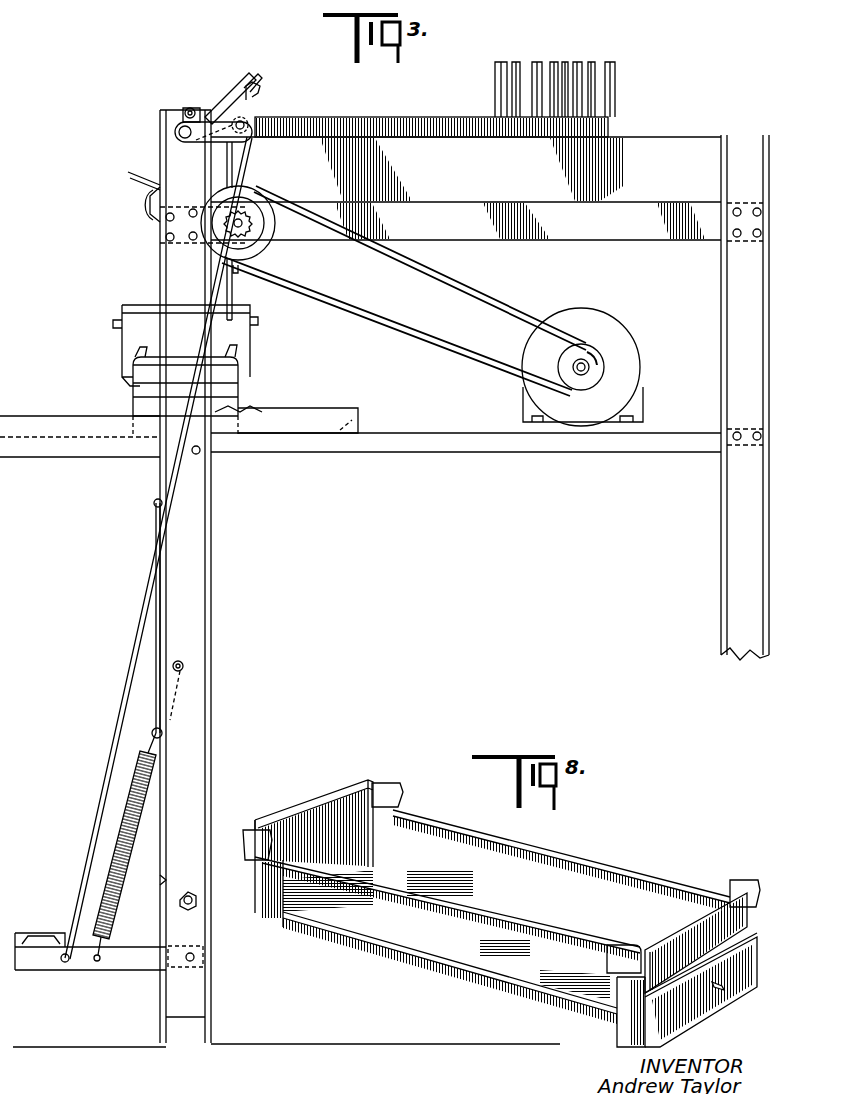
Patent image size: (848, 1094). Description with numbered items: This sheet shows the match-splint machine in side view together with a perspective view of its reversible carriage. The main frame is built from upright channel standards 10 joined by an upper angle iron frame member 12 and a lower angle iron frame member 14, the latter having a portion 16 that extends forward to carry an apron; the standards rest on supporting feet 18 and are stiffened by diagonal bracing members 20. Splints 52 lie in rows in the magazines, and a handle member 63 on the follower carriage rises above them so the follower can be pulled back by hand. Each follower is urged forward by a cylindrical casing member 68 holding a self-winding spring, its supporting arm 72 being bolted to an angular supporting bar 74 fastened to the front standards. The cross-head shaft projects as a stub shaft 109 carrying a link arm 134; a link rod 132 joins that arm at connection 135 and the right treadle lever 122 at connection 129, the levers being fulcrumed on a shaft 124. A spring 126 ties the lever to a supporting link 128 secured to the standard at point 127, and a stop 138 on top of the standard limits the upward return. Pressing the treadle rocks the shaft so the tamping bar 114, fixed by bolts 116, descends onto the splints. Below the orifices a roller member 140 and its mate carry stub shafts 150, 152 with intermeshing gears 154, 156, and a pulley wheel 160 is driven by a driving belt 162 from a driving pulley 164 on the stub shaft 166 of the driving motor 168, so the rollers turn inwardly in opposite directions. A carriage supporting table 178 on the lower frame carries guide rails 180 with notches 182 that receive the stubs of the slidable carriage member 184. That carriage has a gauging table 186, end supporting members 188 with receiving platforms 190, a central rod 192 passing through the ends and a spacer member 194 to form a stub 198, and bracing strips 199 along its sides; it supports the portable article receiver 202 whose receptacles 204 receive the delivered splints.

In FIG. 3, the upright supporting channel standards 10 is at (160, 122).
In FIG. 3, the upper angle iron frame member 12 is at (548, 240).
In FIG. 3, the lower angle iron frame member 14 is at (470, 452).
In FIG. 3, the projecting portion of lower frame member 16 is at (64, 457).
In FIG. 3, the supporting feet 18 is at (200, 1028).
In FIG. 3, the diagonal bracing members 20 is at (155, 669).
In FIG. 3, the splint 52 is at (418, 117).
In FIG. 3, the handle member 63 is at (573, 62).
In FIG. 3, the cylindrical casing member 68 is at (152, 206).
In FIG. 3, the supporting arm 72 is at (140, 175).
In FIG. 3, the angular supporting bar 74 is at (152, 194).
In FIG. 3, the stub shaft 109 is at (175, 136).
In FIG. 3, the tamping bar 114 is at (256, 80).
In FIG. 3, the bolts 116 is at (250, 84).
In FIG. 3, the treadle levers 122 is at (80, 970).
In FIG. 3, the shaft 124 is at (31, 933).
In FIG. 3, the spring 126 is at (122, 895).
In FIG. 3, the securing point of supporting link 127 is at (184, 666).
In FIG. 3, the supporting link 128 is at (152, 724).
In FIG. 3, the connection of link rod to lever 129 is at (62, 962).
In FIG. 3, the link rod 132 is at (135, 638).
In FIG. 3, the link arm 134 is at (248, 121).
In FIG. 3, the connection of link rod to link arm 135 is at (244, 126).
In FIG. 3, the stop 138 is at (188, 108).
In FIG. 3, the roller member 140 is at (220, 106).
In FIG. 3, the stub shaft 150 is at (185, 243).
In FIG. 3, the stub shaft 152 is at (245, 230).
In FIG. 3, the gear 154 is at (170, 222).
In FIG. 3, the gear 156 is at (244, 214).
In FIG. 3, the pulley wheel 160 is at (262, 203).
In FIG. 3, the driving belt 162 is at (452, 276).
In FIG. 3, the driving pulley 164 is at (604, 367).
In FIG. 3, the stub shaft of driving motor 166 is at (582, 376).
In FIG. 3, the driving motor 168 is at (600, 318).
In FIG. 3, the carriage supporting table 178 is at (358, 414).
In FIG. 3, the guide rails 180 is at (346, 408).
In FIG. 3, the notches or stops 182 is at (250, 404).
In FIG. 3, the slidable carriage member 184 is at (122, 405).
In FIG. 8, the slidable carriage member 184 is at (470, 985).
In FIG. 8, the gauging table 186 is at (412, 945).
In FIG. 8, the end supporting members 188 is at (265, 905).
In FIG. 8, the receiving platforms 190 is at (290, 832).
In FIG. 8, the rod 192 is at (458, 896).
In FIG. 8, the spacer member 194 is at (706, 1017).
In FIG. 3, the stub 198 is at (190, 410).
In FIG. 8, the stub 198 is at (726, 990).
In FIG. 8, the bracing strips 199 is at (560, 855).
In FIG. 3, the portable article receiver 202 is at (112, 338).
In FIG. 3, the receiving receptacles 204 is at (252, 340).